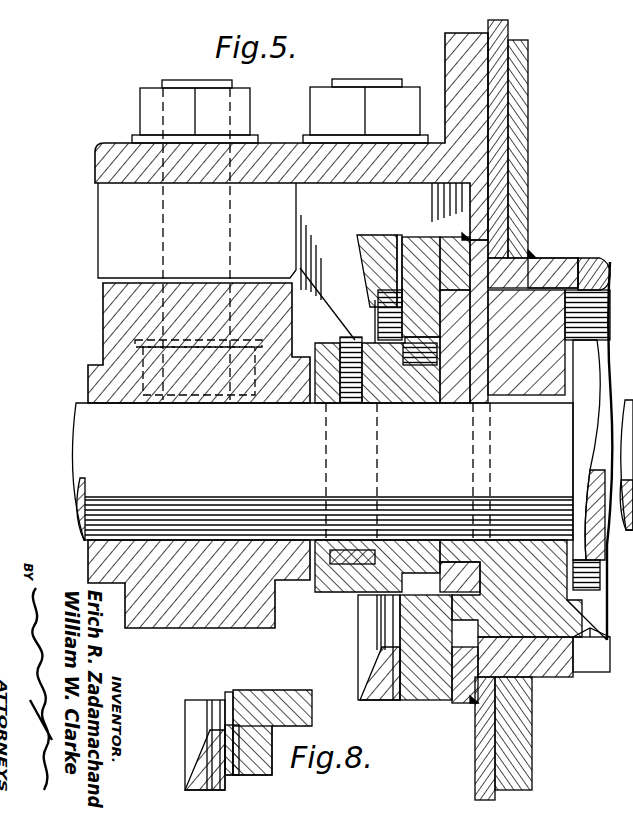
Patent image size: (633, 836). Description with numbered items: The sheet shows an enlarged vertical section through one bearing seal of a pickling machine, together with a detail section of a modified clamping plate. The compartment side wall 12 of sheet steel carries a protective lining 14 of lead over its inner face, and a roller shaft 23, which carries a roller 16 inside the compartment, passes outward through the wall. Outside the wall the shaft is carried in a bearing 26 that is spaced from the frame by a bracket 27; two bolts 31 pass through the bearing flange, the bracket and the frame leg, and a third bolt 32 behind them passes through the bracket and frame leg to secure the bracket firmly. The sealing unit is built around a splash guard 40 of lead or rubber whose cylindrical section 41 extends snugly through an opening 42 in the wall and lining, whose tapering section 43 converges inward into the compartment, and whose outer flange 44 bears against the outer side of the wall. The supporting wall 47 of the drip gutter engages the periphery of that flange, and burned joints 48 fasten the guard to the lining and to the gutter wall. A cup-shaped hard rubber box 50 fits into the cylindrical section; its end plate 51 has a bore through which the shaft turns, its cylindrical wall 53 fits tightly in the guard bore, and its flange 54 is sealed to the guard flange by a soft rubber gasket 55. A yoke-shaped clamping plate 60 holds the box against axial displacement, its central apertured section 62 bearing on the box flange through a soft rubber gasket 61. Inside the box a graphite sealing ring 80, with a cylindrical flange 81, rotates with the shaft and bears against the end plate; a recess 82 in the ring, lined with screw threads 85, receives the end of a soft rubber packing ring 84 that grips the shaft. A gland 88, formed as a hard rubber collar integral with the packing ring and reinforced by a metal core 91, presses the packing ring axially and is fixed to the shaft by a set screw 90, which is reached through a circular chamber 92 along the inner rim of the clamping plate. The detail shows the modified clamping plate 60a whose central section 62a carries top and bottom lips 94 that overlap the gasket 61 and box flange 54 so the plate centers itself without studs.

In FIG. 5, the side wall 12 is at (510, 28).
In FIG. 5, the protective lining 14 is at (518, 88).
In FIG. 5, the roller 16 is at (580, 452).
In FIG. 5, the roller shaft 23 is at (75, 436).
In FIG. 5, the bearing 26 is at (103, 316).
In FIG. 5, the bracket 27 is at (100, 223).
In FIG. 5, the bolt 31 is at (173, 82).
In FIG. 5, the third bolt 32 is at (353, 80).
In FIG. 5, the splash guard 40 is at (572, 262).
In FIG. 5, the cylindrical section 41 is at (548, 268).
In FIG. 5, the opening 42 is at (515, 700).
In FIG. 5, the tapering section 43 is at (598, 270).
In FIG. 5, the flange 44 is at (462, 237).
In FIG. 5, the supporting wall 47 is at (483, 785).
In FIG. 5, the burned joint 48 is at (468, 235).
In FIG. 5, the box 50 is at (568, 598).
In FIG. 8, the box 50 is at (268, 690).
In FIG. 5, the end plate 51 is at (550, 395).
In FIG. 5, the cylindrical wall 53 is at (460, 618).
In FIG. 5, the flange 54 is at (410, 237).
In FIG. 8, the flange 54 is at (266, 775).
In FIG. 5, the soft rubber gasket 55 is at (455, 237).
In FIG. 5, the clamping plate 60 is at (352, 252).
In FIG. 8, the clamping plate 60a is at (182, 776).
In FIG. 5, the soft rubber gasket 61 is at (397, 235).
In FIG. 8, the soft rubber gasket 61 is at (228, 692).
In FIG. 5, the central apertured section 62 is at (370, 612).
In FIG. 8, the central section 62a is at (200, 722).
In FIG. 5, the sealing ring 80 is at (500, 405).
In FIG. 5, the cylindrical flange 81 is at (442, 585).
In FIG. 5, the recess 82 is at (455, 403).
In FIG. 5, the packing ring 84 is at (420, 403).
In FIG. 5, the screw threads 85 is at (448, 540).
In FIG. 5, the gland 88 is at (330, 345).
In FIG. 5, the set screw 90 is at (360, 340).
In FIG. 5, the metal core 91 is at (348, 403).
In FIG. 5, the circular chamber 92 is at (380, 660).
In FIG. 8, the lip 94 is at (238, 778).